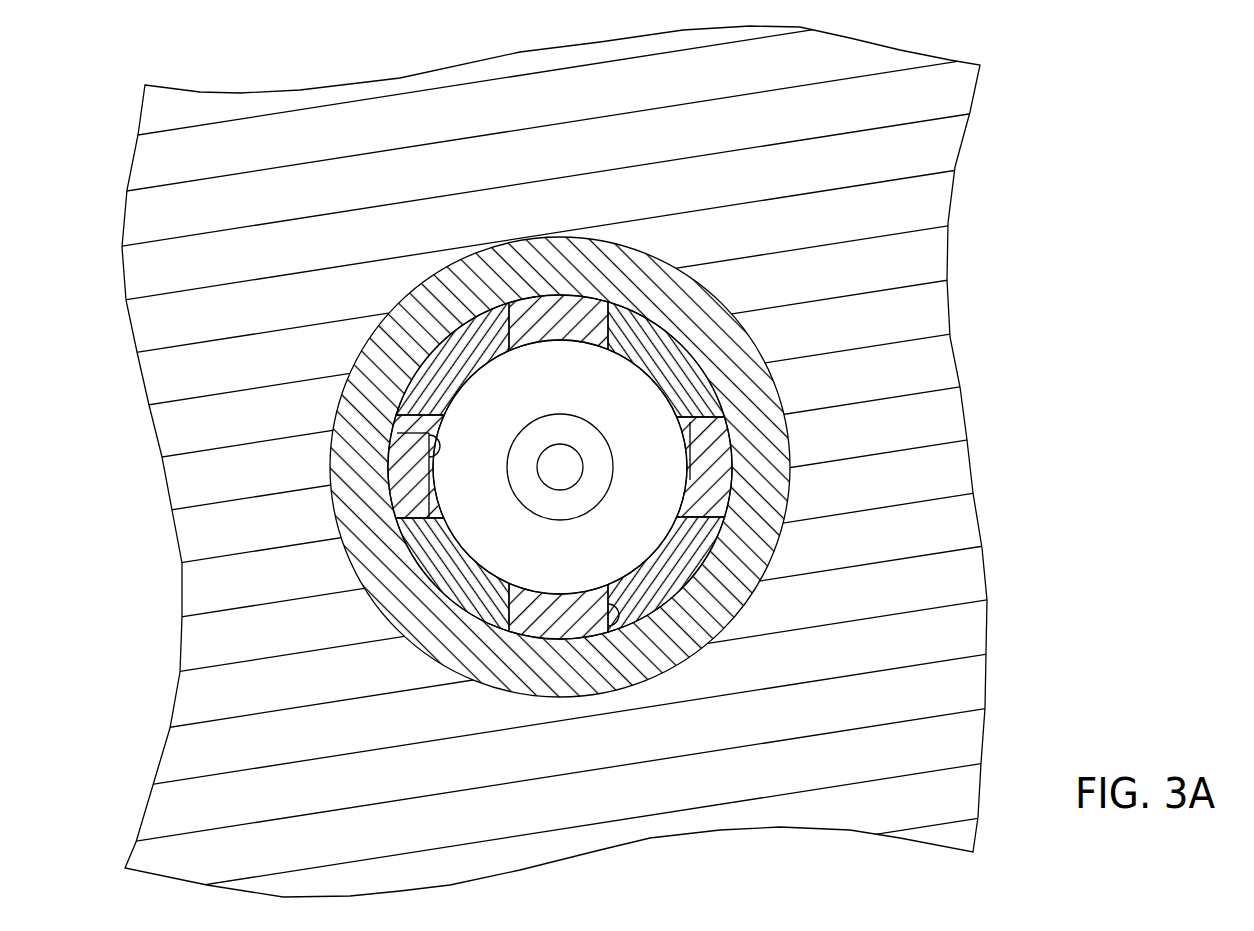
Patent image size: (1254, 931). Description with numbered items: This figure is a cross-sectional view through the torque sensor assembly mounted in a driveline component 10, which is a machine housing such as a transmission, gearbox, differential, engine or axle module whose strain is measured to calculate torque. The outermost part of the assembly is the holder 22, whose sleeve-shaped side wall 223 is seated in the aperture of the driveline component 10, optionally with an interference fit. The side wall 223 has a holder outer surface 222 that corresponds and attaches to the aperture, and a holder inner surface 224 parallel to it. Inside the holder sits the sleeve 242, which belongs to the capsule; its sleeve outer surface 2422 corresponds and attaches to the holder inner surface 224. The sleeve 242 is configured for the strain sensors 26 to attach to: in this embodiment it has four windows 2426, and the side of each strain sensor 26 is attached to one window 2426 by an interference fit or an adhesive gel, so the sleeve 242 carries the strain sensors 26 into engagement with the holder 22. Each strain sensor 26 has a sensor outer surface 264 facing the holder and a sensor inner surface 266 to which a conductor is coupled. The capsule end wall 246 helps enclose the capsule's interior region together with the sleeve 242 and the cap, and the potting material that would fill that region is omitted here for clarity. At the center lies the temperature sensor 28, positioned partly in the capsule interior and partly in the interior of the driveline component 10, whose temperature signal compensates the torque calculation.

The driveline component 10 is at (879, 766).
The holder 22 is at (608, 505).
The holder outer surface 222 is at (614, 467).
The side wall 223 is at (756, 397).
The holder inner surface 224 is at (724, 545).
The sleeve 242 is at (442, 491).
The sleeve outer surface 2422 is at (412, 357).
The window 2426 is at (615, 632).
The capsule end wall 246 is at (518, 413).
The strain sensor 26 is at (472, 537).
The sensor outer surface 264 is at (328, 507).
The sensor inner surface 266 is at (425, 437).
The temperature sensor 28 is at (512, 490).